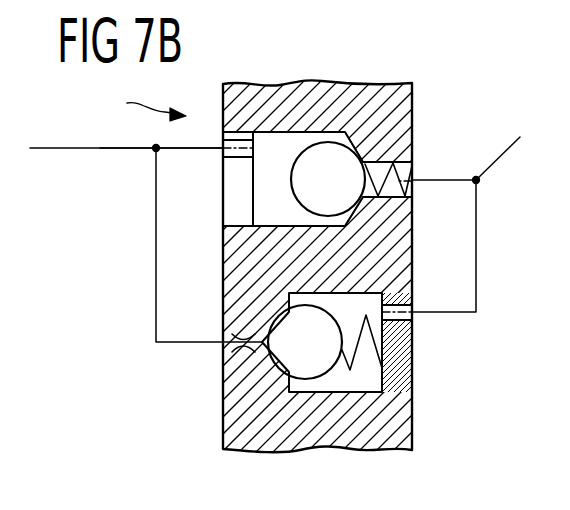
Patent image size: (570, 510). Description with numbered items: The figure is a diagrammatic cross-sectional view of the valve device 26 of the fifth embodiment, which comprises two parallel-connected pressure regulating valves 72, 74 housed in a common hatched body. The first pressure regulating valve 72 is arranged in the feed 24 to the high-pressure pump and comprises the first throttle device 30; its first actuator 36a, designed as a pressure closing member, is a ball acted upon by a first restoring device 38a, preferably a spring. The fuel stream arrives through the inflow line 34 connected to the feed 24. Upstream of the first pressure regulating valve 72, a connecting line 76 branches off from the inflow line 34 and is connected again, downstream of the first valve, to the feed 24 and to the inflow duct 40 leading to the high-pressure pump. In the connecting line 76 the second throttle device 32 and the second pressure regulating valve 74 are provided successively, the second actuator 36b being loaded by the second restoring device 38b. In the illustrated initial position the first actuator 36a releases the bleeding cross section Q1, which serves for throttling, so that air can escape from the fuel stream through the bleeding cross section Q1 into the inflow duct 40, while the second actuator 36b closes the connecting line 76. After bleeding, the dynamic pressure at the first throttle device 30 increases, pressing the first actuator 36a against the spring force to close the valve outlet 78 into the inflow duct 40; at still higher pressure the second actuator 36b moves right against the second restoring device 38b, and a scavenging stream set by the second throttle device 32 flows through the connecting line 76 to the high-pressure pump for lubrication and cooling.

The feed 24 is at (75, 146).
The valve device 26 is at (137, 102).
The first throttle device 30 is at (335, 140).
The second throttle device 32 is at (245, 352).
The inflow line 34 is at (116, 150).
The first actuator 36a is at (353, 197).
The second actuator 36b is at (328, 360).
The first restoring device 38a is at (413, 173).
The second restoring device 38b is at (413, 345).
The inflow duct 40 is at (507, 153).
The first pressure regulating valve 72 is at (288, 132).
The second pressure regulating valve 74 is at (367, 393).
The connecting line 76 is at (155, 313).
The valve outlet 78 is at (414, 192).
The bleeding cross section Q1 is at (237, 244).